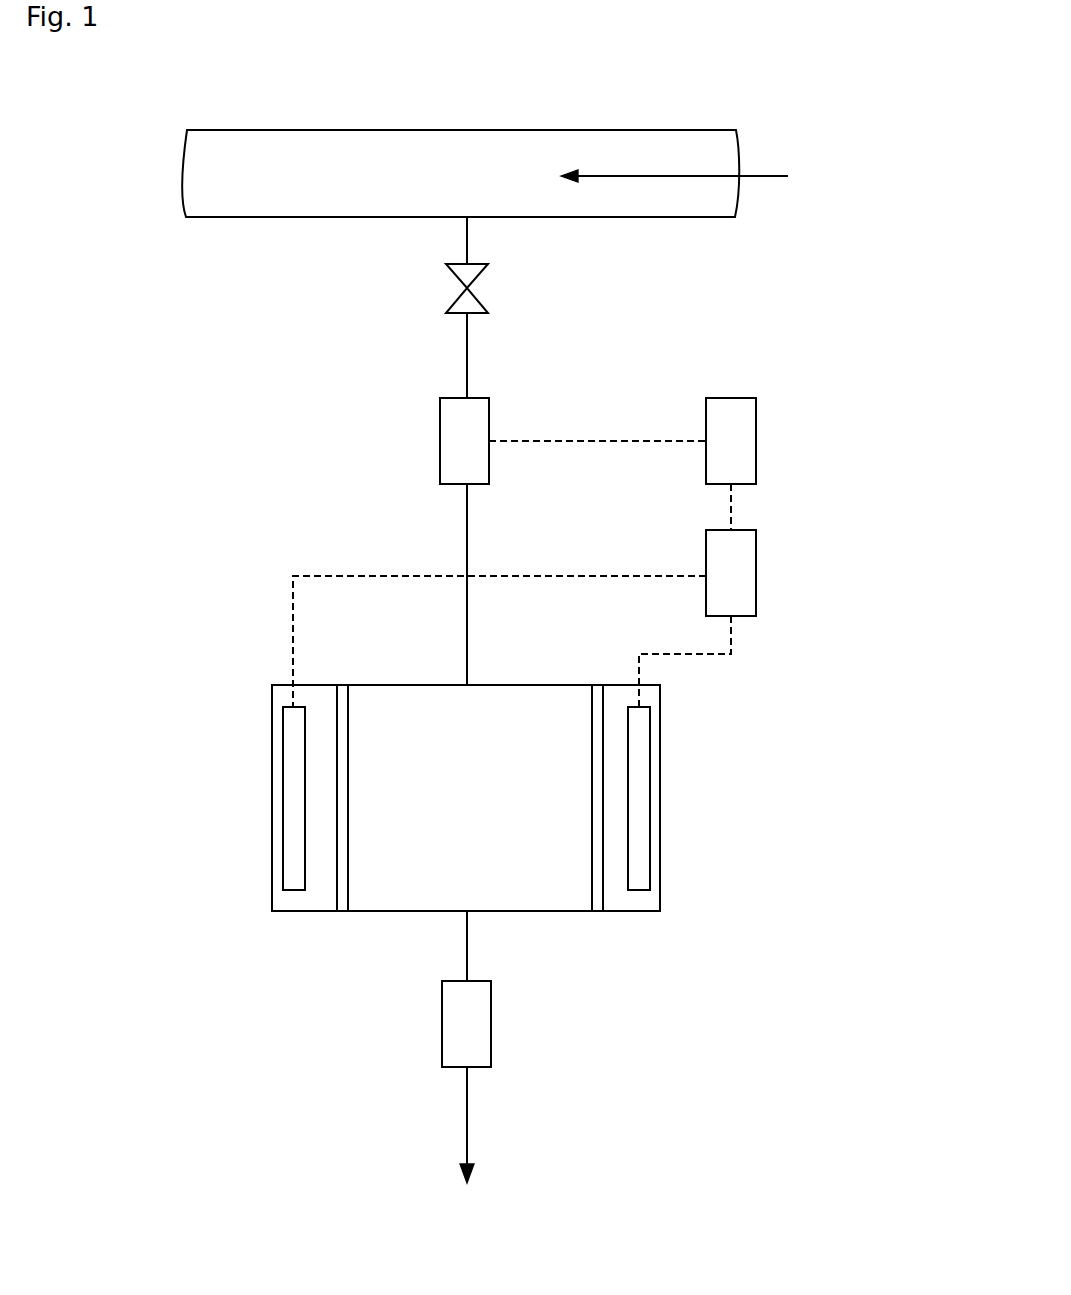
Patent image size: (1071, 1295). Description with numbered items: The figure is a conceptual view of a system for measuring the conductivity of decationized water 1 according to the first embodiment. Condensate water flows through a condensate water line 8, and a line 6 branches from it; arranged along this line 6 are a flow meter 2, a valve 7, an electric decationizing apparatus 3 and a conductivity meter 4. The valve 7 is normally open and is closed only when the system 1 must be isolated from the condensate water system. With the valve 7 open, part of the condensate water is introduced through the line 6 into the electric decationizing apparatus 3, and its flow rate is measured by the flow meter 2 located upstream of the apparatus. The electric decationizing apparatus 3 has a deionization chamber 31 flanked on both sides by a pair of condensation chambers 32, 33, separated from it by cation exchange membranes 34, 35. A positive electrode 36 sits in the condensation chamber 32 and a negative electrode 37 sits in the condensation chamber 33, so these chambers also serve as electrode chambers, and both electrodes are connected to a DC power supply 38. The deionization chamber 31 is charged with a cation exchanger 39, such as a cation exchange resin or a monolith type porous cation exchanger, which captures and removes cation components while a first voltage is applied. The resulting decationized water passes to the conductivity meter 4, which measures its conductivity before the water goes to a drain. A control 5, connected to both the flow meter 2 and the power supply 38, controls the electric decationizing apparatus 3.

The system for measuring the conductivity of decationized water 1 is at (256, 397).
The flow meter 2 is at (478, 413).
The electric decationizing apparatus 3 is at (463, 757).
The conductivity meter 4 is at (478, 1028).
The control 5 is at (743, 446).
The line 6 is at (467, 350).
The valve 7 is at (468, 297).
The condensate water line 8 is at (349, 218).
The deionization chamber 31 is at (404, 698).
The condensation chamber 32 is at (644, 692).
The condensation chamber 33 is at (300, 698).
The cation exchange membrane 34 is at (592, 697).
The cation exchange membrane 35 is at (340, 697).
The positive electrode 36 is at (643, 761).
The negative electrode 37 is at (288, 759).
The DC power supply 38 is at (745, 574).
The cation exchanger 39 is at (470, 842).